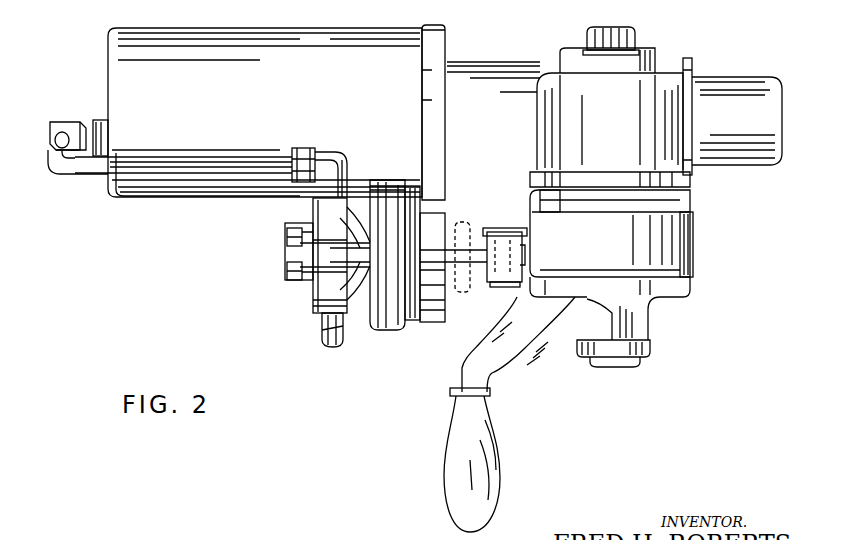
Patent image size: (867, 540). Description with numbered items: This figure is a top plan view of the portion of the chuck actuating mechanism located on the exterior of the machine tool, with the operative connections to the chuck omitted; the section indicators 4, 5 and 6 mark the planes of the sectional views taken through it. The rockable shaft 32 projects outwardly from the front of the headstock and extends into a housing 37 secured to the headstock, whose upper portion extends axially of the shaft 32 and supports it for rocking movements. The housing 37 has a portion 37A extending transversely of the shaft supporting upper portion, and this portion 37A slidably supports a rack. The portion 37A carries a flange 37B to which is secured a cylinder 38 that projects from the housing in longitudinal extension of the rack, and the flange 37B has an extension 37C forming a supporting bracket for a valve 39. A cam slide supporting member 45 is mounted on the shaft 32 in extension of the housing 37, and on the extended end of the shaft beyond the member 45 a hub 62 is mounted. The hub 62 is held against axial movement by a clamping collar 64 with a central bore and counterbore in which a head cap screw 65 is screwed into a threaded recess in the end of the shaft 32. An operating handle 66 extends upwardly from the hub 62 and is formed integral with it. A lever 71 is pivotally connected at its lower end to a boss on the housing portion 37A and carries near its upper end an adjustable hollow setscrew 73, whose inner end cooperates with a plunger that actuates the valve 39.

The section line 4- 4 is at (727, 117).
The section line 5- 5 is at (443, 252).
The section line 6- 6 is at (610, 383).
The shaft 32 is at (633, 26).
The housing 37 is at (588, 159).
The housing portion 37A is at (504, 160).
The flange 37B is at (446, 44).
The extension 37C is at (425, 322).
The cylinder 38 is at (266, 84).
The valve 39 is at (390, 332).
The cam slide supporting member 45 is at (694, 223).
The hub 62 is at (677, 289).
The clamping collar 64 is at (650, 343).
The head cap screw 65 is at (640, 362).
The operating handle 66 is at (520, 374).
The lever 71 is at (518, 284).
The adjustable hollow setscrew 73 is at (527, 252).